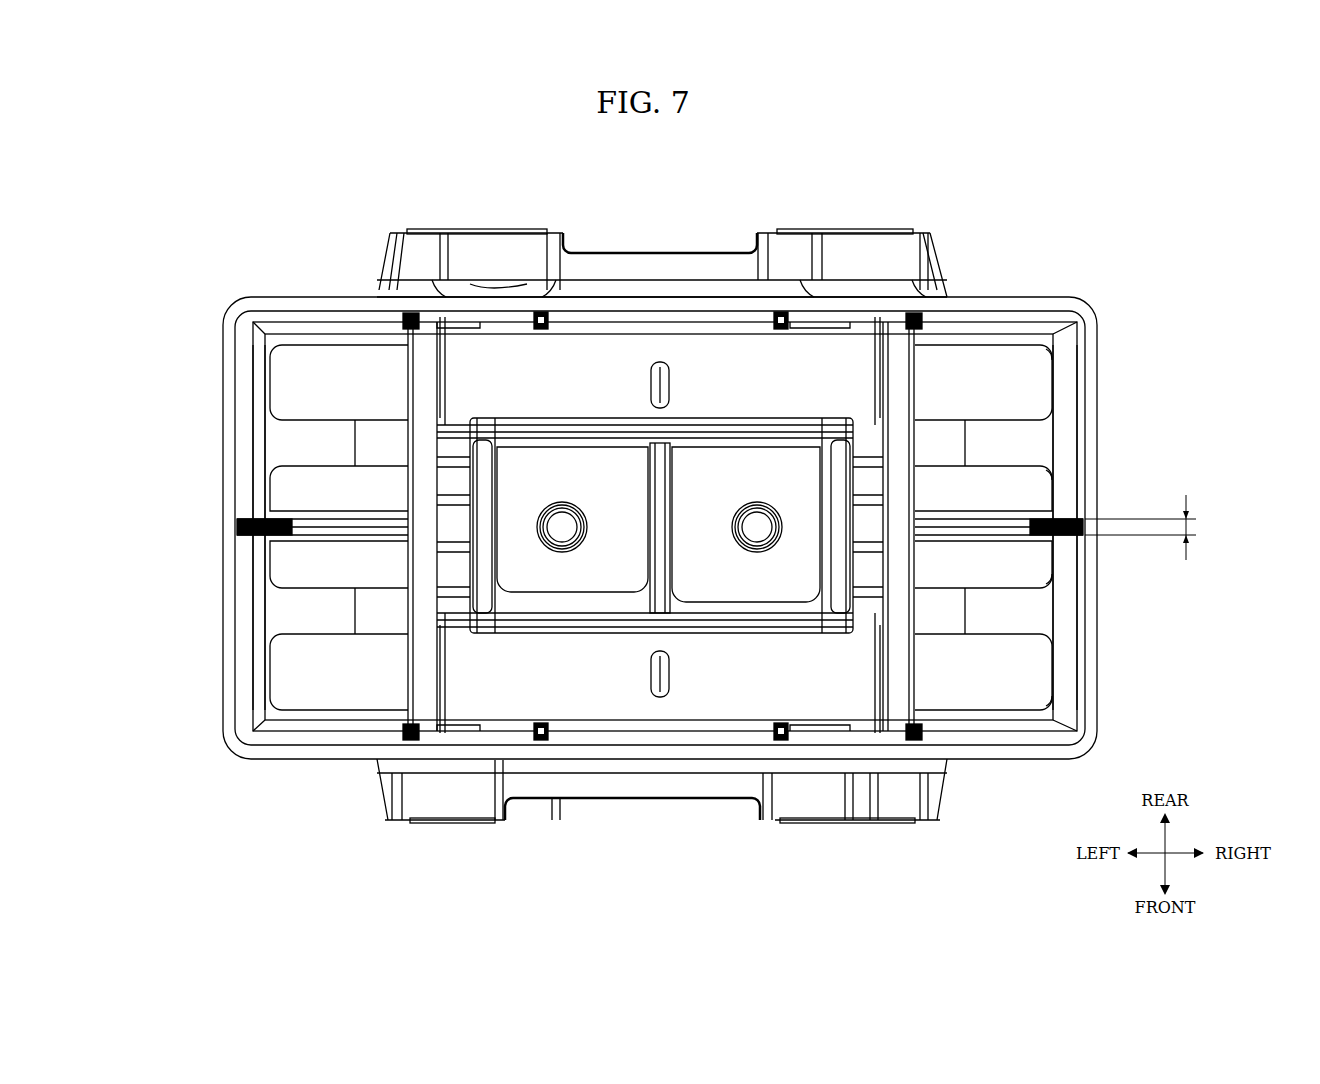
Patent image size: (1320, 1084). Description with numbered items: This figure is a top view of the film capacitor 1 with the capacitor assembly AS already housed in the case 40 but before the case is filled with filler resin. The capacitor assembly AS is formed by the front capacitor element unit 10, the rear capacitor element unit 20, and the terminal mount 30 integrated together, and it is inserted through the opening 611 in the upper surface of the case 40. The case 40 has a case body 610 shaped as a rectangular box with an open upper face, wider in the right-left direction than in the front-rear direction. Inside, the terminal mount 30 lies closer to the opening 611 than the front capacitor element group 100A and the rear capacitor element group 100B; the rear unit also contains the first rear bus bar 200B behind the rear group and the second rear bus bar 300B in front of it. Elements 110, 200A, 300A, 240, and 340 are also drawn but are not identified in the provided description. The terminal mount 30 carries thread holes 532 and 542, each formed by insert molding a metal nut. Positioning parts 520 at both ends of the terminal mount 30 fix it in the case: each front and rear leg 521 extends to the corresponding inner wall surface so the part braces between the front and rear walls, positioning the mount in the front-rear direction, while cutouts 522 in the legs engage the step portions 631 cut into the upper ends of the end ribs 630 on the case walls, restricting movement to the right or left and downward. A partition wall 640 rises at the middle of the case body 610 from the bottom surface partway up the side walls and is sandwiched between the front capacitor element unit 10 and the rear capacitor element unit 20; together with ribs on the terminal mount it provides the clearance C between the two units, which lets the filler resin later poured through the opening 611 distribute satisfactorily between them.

The film capacitor 1 is at (598, 229).
The front capacitor element unit 10 is at (255, 651).
The rear capacitor element unit 20 is at (256, 448).
The terminal mount 30 is at (735, 632).
The case 40 is at (1068, 280).
The side wall portion 110 is at (267, 447).
The front capacitor element group 100A is at (1067, 620).
The rear capacitor element group 100B is at (1067, 448).
The first recess portion 200A is at (1038, 676).
The first rear bus bar 200B is at (1040, 384).
The first rib portion 300A is at (1040, 568).
The second rear bus bar 300B is at (1038, 495).
The right mounting plate 240 is at (733, 458).
The left mounting plate 340 is at (560, 452).
The positioning part 520 is at (915, 440).
The leg 521 is at (406, 400).
The cutout 522 is at (406, 316).
The thread hole 532 is at (757, 532).
The thread hole 542 is at (563, 535).
The case body 610 is at (1088, 330).
The opening 611 is at (252, 360).
The rib 630 is at (405, 290).
The step portion 631 is at (415, 325).
The partition wall 640 is at (1085, 538).
The capacitor assembly AS is at (663, 330).
The clearance C is at (1149, 527).